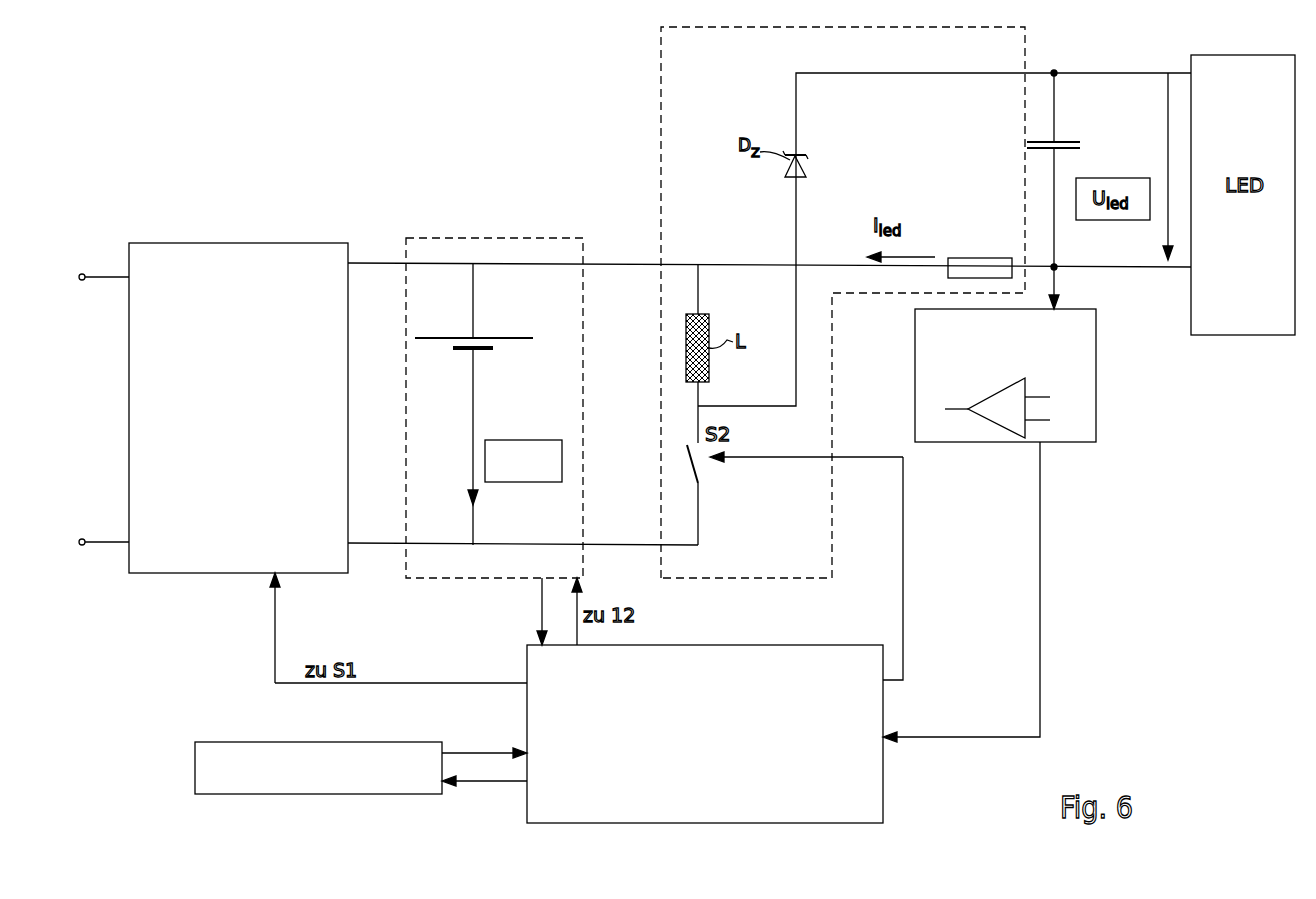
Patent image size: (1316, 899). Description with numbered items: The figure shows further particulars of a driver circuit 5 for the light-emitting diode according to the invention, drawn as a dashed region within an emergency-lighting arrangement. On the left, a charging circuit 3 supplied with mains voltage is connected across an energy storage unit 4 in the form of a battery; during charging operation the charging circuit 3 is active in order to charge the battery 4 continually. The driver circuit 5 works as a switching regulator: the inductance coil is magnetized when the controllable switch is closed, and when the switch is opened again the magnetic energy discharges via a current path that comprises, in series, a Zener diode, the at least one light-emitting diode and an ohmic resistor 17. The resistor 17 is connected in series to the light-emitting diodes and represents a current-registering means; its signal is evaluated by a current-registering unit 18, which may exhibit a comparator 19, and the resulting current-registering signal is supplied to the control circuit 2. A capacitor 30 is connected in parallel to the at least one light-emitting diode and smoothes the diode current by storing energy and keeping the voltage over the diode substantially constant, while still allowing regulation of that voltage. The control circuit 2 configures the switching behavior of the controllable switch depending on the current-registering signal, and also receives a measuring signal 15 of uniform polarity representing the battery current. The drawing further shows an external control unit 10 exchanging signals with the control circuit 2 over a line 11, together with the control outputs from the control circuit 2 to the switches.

The control unit 2 is at (883, 795).
The charging circuit 3 is at (233, 243).
The energy storage unit 4 is at (478, 334).
The driver circuit 5 is at (1028, 45).
The external control unit 10 is at (297, 794).
The signal line to external control unit 11 is at (488, 785).
The measuring signal 15 is at (537, 603).
The ohmic resistor 17 is at (977, 258).
The current-registering unit 18 is at (1096, 375).
The comparator 19 is at (995, 423).
The capacitor 30 is at (1065, 140).